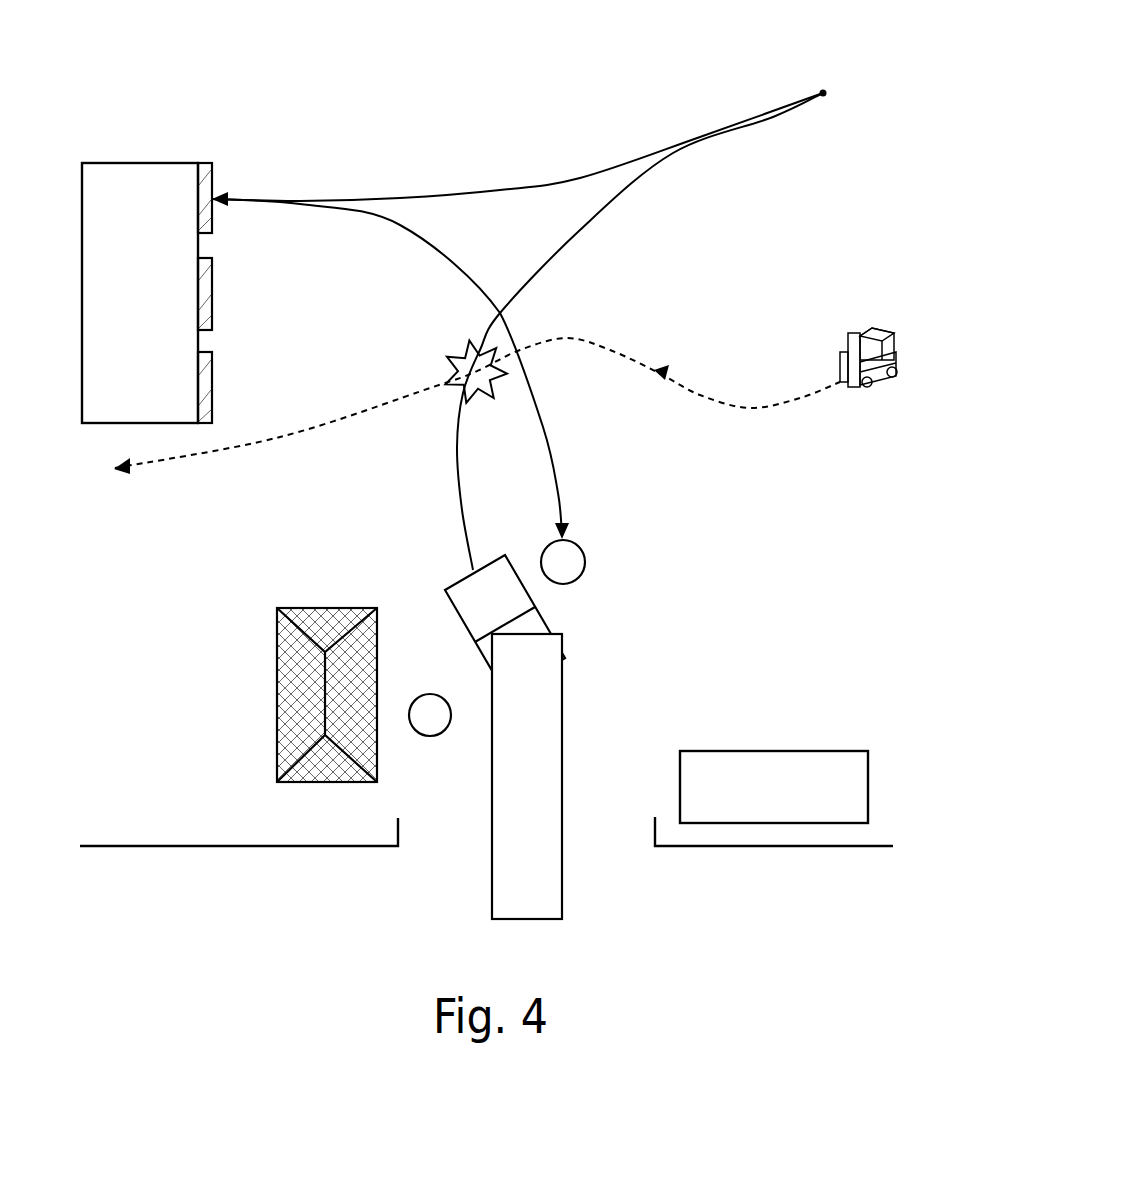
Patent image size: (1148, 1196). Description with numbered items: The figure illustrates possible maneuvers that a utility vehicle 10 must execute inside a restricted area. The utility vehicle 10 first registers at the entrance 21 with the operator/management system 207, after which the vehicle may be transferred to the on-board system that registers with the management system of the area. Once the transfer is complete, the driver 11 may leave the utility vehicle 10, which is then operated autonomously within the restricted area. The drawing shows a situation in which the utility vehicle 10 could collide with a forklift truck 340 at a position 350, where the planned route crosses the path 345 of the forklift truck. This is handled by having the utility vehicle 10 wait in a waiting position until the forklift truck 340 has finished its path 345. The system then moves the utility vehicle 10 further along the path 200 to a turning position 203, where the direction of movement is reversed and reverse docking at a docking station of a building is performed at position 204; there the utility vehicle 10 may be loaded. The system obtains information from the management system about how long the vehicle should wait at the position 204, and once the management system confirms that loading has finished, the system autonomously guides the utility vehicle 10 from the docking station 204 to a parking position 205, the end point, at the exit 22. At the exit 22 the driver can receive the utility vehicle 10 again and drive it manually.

The utility vehicle 10 is at (552, 710).
The driver 11 is at (427, 683).
The entrance 21 is at (609, 836).
The exit 22 is at (774, 787).
The path 200 is at (617, 203).
The turning position 203 is at (823, 90).
The docking station position 204 is at (213, 178).
The parking position 205 is at (588, 562).
The operator/management system 207 is at (285, 687).
The forklift truck 340 is at (890, 375).
The path of the forklift truck 345 is at (750, 410).
The potential collision position 350 is at (455, 352).